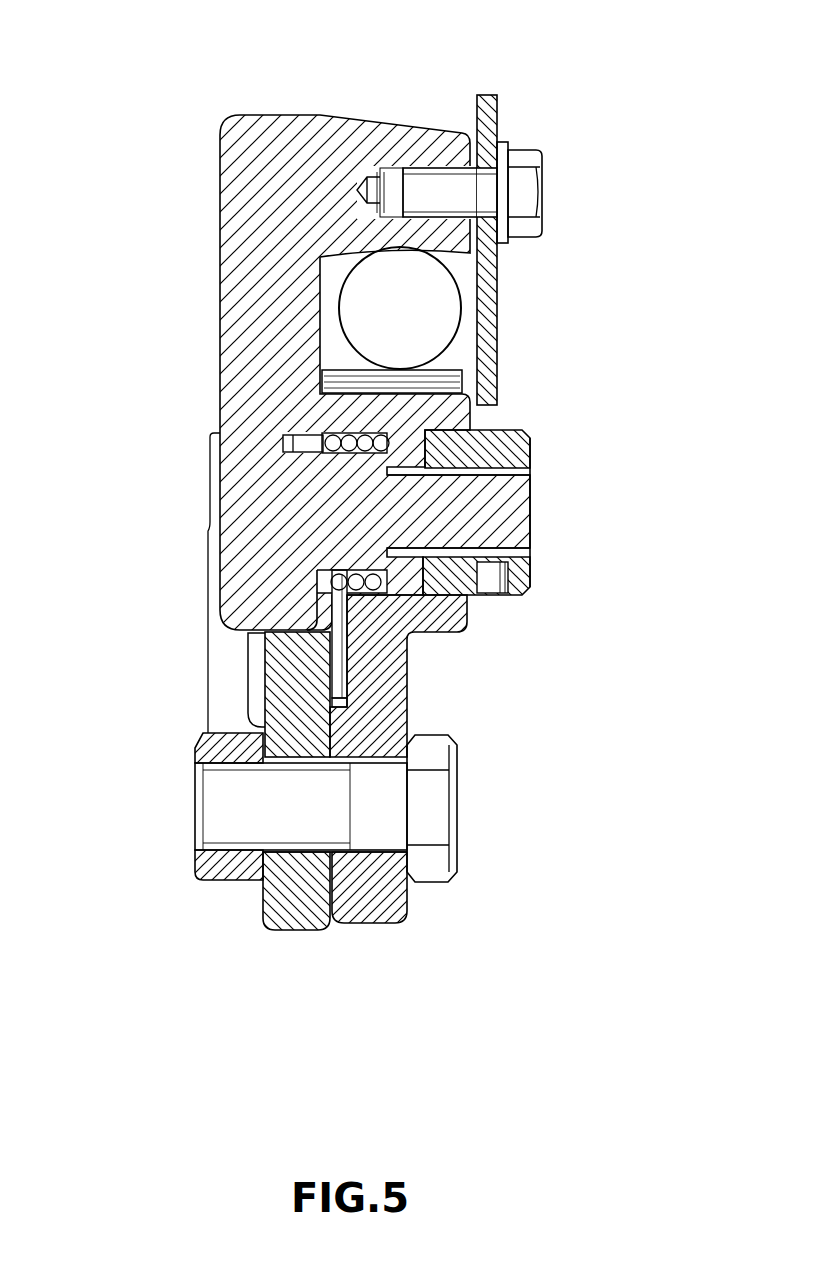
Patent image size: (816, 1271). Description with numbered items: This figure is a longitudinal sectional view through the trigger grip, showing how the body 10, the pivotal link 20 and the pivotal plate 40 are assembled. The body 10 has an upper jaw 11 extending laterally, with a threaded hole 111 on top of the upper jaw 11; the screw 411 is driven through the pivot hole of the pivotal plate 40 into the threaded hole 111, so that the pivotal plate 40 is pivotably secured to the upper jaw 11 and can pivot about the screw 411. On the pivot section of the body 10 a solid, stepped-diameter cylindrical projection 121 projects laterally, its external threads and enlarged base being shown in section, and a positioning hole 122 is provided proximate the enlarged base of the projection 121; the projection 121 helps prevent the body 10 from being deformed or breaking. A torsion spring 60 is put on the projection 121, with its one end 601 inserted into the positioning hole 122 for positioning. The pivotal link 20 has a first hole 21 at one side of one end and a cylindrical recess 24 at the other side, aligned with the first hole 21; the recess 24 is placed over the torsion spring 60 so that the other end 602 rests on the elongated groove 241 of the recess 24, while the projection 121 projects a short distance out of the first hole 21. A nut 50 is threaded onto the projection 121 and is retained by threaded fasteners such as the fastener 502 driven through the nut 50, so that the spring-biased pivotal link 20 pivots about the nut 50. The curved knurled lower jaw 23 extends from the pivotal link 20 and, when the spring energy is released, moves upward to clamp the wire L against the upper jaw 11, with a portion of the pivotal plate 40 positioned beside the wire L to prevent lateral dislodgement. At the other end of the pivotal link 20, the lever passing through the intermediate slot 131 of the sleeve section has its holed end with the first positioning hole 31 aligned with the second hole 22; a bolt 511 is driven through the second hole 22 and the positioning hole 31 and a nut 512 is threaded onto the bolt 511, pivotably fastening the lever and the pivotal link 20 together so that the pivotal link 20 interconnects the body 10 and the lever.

The body 10 is at (247, 242).
The upper jaw 11 is at (405, 147).
The threaded hole 111 is at (385, 188).
The pivotal plate 40 is at (498, 98).
The screw 411 is at (530, 193).
The wire L is at (480, 277).
The lower jaw 23 is at (462, 378).
The nut 50 is at (507, 445).
The cylindrical projection 121 is at (507, 517).
The positioning hole 122 is at (273, 442).
The threaded fastener 502 is at (490, 572).
The first hole 21 is at (503, 595).
The one end of torsion spring 601 is at (290, 440).
The other end of torsion spring 602 is at (337, 687).
The cylindrical recess 24 is at (323, 597).
The torsion spring 60 is at (390, 588).
The intermediate slot 131 is at (256, 651).
The nut 512 is at (213, 747).
The bolt 511 is at (220, 805).
The first positioning hole 31 is at (257, 898).
The second hole 22 is at (388, 855).
The pivotal link 20 is at (368, 902).
The elongated groove 241 is at (425, 725).